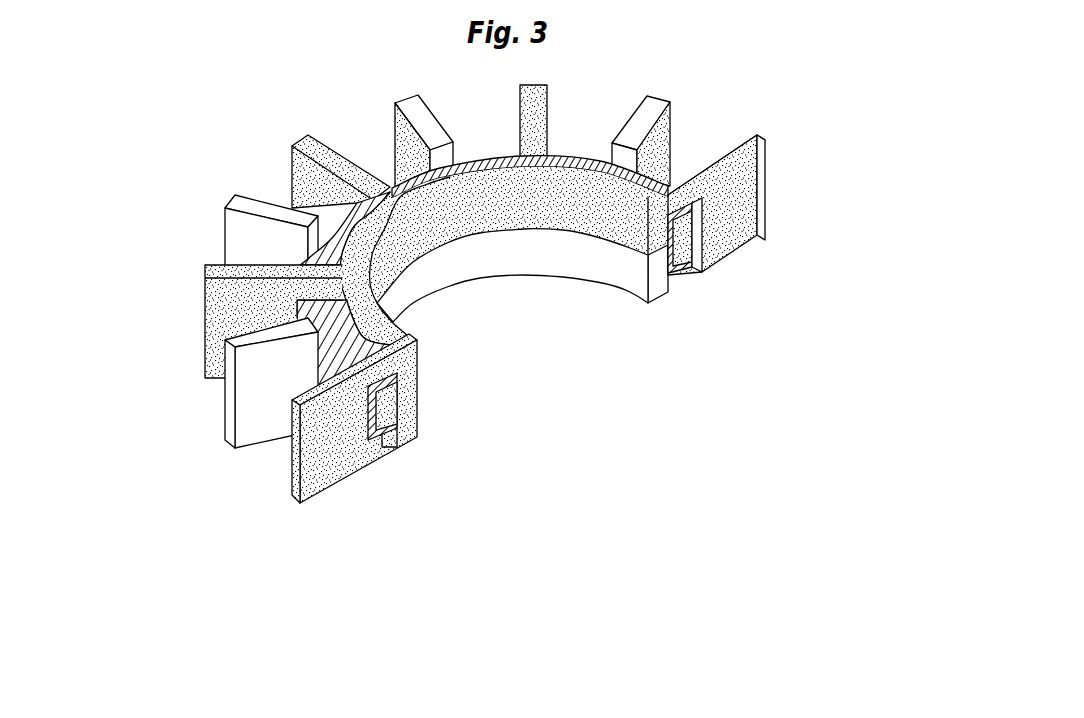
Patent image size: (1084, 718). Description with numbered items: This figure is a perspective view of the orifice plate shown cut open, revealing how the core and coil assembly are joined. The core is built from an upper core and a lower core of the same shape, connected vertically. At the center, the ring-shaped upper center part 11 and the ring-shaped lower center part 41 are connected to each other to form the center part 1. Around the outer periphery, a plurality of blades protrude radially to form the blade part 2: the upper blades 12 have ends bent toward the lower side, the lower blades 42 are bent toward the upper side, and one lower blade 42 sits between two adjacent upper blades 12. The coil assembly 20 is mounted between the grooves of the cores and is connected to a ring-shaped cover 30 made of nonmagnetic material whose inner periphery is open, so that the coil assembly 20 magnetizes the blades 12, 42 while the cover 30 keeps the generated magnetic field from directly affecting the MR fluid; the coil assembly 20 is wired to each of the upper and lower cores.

The center part 1 is at (437, 270).
The upper center part 11 is at (578, 205).
The lower center part 41 is at (612, 270).
The blade part 2 is at (314, 484).
The upper blade 12 is at (317, 458).
The lower blade 42 is at (258, 403).
The coil assembly 20 is at (680, 243).
The cover 30 is at (695, 272).